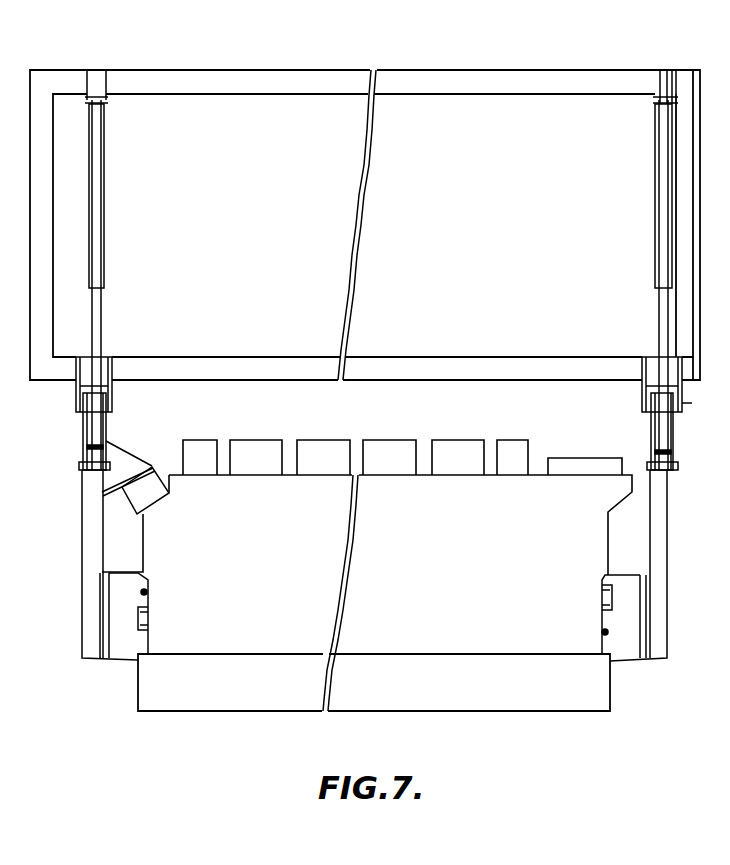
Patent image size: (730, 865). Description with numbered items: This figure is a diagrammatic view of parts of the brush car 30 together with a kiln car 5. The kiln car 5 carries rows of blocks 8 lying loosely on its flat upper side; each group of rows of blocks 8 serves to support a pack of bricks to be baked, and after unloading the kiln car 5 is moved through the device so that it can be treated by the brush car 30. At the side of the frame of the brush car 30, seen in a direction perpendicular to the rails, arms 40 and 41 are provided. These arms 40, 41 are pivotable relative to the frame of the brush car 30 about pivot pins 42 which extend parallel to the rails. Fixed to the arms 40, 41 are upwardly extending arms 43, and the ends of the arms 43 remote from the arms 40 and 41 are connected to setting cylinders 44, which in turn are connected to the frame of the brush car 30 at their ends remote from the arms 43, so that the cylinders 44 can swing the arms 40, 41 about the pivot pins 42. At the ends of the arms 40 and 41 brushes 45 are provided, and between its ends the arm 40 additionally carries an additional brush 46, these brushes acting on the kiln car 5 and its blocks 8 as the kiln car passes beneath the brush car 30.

The brush car 30 is at (170, 67).
The setting cylinders 44 is at (98, 204).
The upwardly extending arms 43 is at (80, 438).
The pivot pins 42 is at (640, 402).
The arm 40 is at (88, 537).
The arm 41 is at (657, 522).
The kiln car 5 is at (535, 489).
The blocks 8 is at (458, 450).
The additional brush 46 is at (135, 498).
The brushes 45 is at (127, 660).